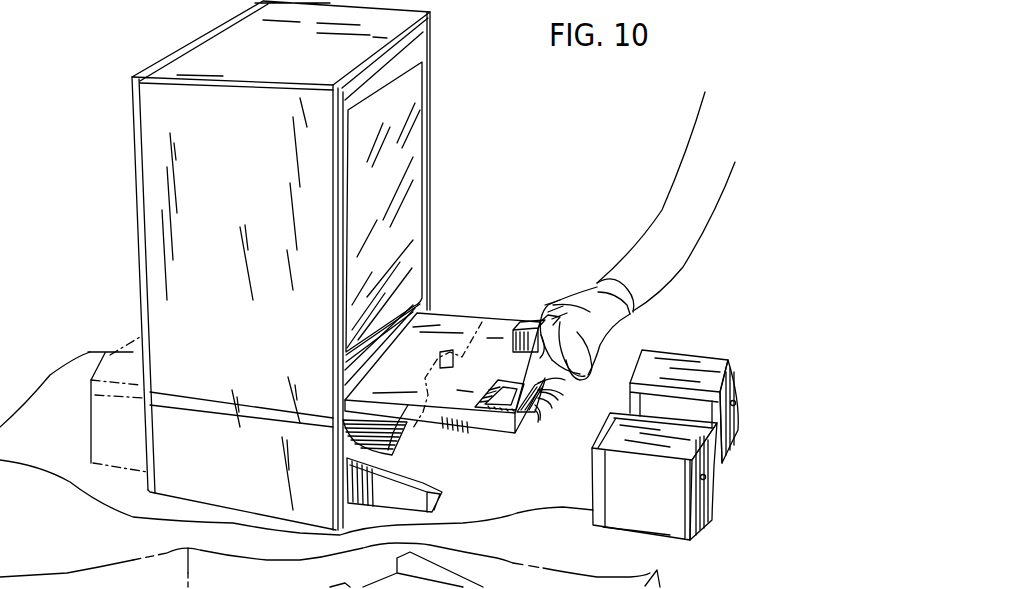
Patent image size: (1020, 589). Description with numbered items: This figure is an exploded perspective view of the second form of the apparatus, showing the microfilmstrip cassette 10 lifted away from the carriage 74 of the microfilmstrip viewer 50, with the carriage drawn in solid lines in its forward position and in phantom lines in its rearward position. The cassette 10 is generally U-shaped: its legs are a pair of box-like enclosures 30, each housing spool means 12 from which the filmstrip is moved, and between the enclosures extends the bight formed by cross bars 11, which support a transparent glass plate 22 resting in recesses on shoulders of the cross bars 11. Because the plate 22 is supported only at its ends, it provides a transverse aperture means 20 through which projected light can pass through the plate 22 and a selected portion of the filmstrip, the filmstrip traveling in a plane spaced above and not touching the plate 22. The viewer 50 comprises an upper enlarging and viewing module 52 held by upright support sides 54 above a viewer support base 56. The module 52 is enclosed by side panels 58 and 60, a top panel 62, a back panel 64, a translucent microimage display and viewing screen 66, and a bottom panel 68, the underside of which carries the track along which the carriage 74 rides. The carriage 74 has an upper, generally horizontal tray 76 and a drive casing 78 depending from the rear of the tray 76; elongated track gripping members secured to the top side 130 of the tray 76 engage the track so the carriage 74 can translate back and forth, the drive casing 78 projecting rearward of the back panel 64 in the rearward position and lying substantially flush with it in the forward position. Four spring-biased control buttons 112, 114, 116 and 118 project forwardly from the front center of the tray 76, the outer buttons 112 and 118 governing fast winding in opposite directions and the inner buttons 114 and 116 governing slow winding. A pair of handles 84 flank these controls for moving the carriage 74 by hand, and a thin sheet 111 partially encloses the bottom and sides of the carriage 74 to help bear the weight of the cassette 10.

The microfilmstrip cassette 10 is at (760, 335).
The cross bars 11 is at (628, 392).
The spool means 12 is at (738, 405).
The transverse aperture means 20 is at (643, 395).
The transparent glass plate 22 is at (685, 417).
The box-like enclosures 30 is at (742, 383).
The microfilmstrip viewer 50 is at (99, 78).
The upper enlarging and viewing module 52 is at (431, 143).
The upright support sides 54 is at (240, 460).
The viewer support base 56 is at (402, 436).
The side panel 58 is at (262, 216).
The side panel 60 is at (431, 27).
The top panel 62 is at (285, 64).
The back panel 64 is at (133, 184).
The translucent microimage display and viewing screen 66 is at (383, 178).
The bottom panel 68 is at (427, 298).
The carriage 74 is at (492, 312).
The upper tray 76 is at (533, 300).
The drive casing 78 is at (127, 443).
The handles 84 is at (598, 348).
The thin sheet 111 is at (440, 495).
The control button 112 is at (533, 412).
The control button 114 is at (545, 398).
The control button 116 is at (560, 380).
The control button 118 is at (570, 362).
The top side of the tray 130 is at (410, 383).